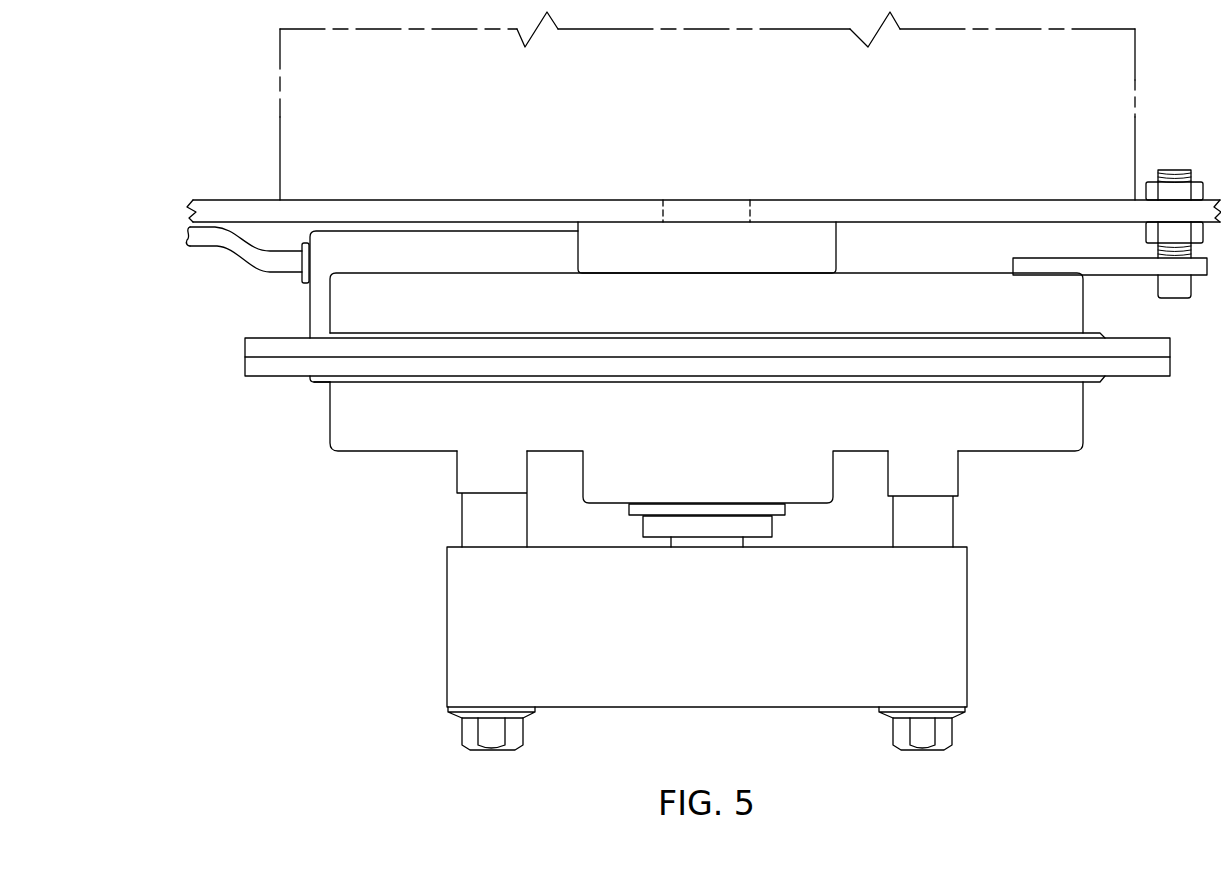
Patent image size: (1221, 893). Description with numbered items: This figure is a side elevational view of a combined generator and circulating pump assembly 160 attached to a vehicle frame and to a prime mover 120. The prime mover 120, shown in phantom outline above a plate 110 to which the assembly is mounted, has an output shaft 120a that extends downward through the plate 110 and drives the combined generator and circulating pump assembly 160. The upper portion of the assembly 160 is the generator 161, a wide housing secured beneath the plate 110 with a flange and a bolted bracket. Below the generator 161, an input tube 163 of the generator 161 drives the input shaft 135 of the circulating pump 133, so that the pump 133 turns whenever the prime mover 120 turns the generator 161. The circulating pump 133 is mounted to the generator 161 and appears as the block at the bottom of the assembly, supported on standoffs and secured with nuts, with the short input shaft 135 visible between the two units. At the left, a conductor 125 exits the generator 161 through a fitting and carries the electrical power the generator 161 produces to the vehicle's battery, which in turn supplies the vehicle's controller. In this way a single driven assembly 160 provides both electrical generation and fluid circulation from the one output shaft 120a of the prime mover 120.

The prime mover 120 is at (280, 52).
The output shaft 120a is at (750, 207).
The support plate 110 is at (215, 200).
The combined generator and circulating pump assembly 160 is at (190, 309).
The conductor 125 is at (277, 273).
The generator 161 is at (472, 313).
The input tube 163 is at (633, 515).
The input shaft 135 is at (773, 527).
The circulating pump 133 is at (590, 636).